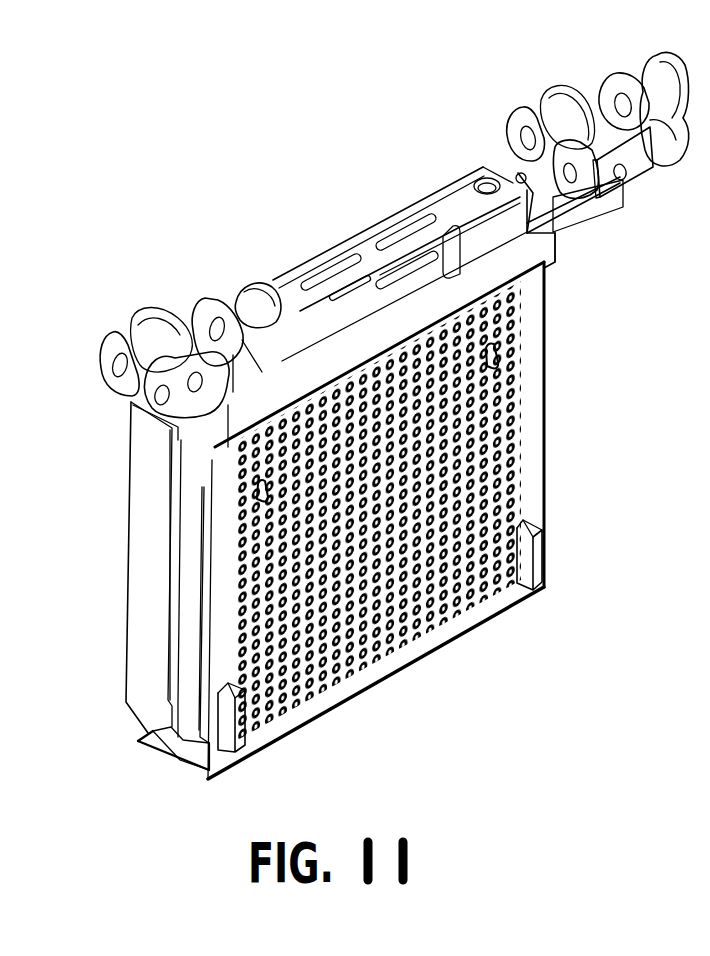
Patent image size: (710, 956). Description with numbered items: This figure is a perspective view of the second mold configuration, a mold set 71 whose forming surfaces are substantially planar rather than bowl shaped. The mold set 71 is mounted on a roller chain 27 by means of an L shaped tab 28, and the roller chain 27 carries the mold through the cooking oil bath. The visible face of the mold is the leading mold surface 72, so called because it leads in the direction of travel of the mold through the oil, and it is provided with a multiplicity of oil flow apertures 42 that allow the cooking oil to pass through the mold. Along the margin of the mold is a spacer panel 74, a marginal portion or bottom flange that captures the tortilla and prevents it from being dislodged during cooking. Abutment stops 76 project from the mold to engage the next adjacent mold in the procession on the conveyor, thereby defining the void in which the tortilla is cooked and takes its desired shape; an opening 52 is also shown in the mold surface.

The roller chain 27 is at (147, 317).
The L shaped tab 28 is at (518, 175).
The oil flow aperture 42 is at (452, 626).
The slot 52 is at (500, 354).
The mold set 71 is at (546, 413).
The leading mold surface 72 is at (520, 490).
The spacer panel 74 is at (130, 600).
The abutment stop 76 is at (240, 745).